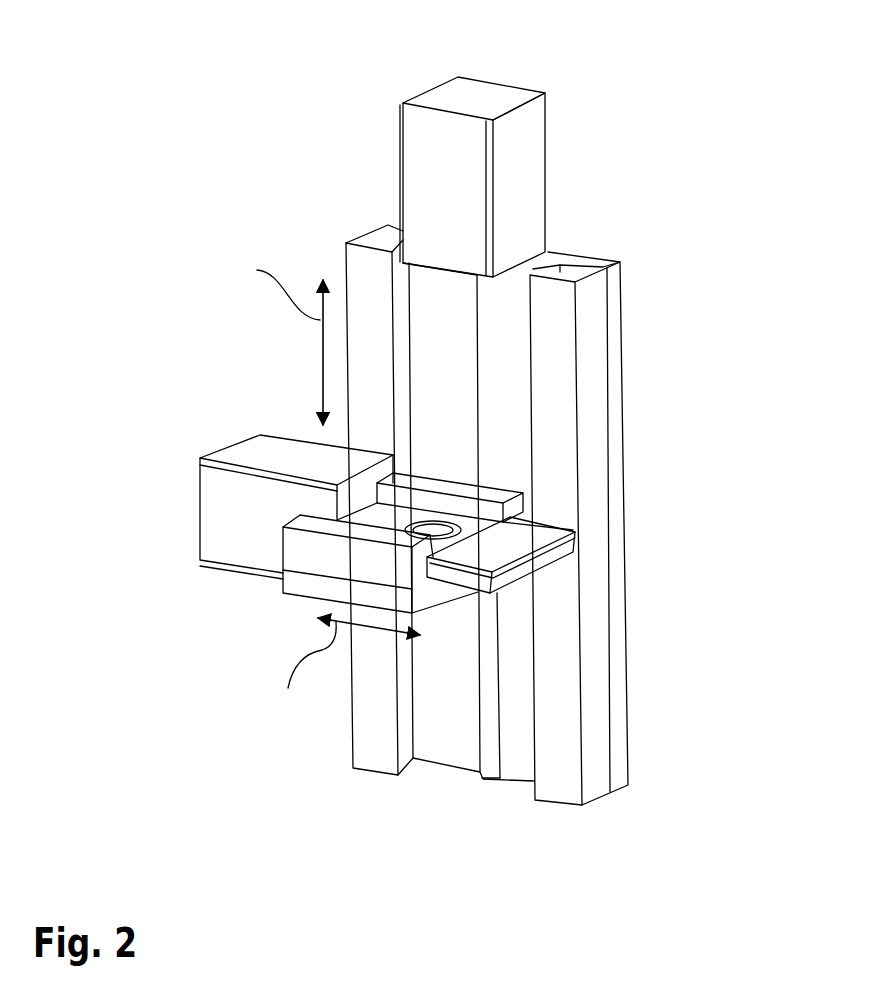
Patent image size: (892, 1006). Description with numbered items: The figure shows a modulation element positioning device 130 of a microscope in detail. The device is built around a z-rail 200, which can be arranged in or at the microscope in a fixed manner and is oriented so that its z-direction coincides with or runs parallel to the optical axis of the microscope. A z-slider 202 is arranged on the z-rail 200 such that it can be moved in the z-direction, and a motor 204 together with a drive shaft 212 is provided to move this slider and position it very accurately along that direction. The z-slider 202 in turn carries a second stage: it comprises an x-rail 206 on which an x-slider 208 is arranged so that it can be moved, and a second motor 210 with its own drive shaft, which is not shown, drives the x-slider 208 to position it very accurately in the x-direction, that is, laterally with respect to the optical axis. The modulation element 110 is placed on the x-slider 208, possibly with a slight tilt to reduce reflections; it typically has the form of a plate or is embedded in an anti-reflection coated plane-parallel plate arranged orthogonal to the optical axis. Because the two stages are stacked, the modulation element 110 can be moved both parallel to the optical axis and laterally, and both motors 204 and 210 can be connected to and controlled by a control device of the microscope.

The modulation element positioning device 130 is at (660, 93).
The motor 204 is at (430, 182).
The z-rail 200 is at (562, 397).
The motor 210 is at (267, 452).
The x-rail 206 is at (295, 540).
The z-slider 202 is at (300, 583).
The x-slider 208 is at (527, 560).
The modulation element 110 is at (533, 534).
The drive shaft 212 is at (490, 768).